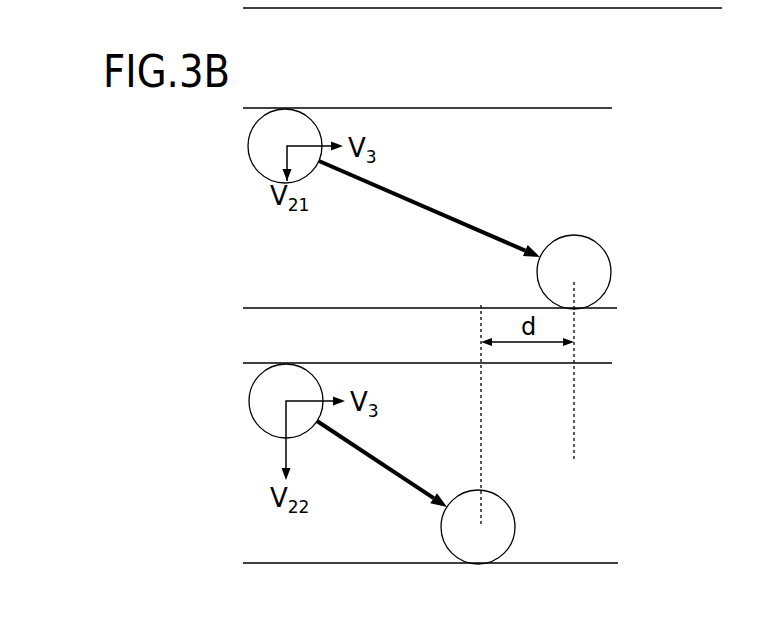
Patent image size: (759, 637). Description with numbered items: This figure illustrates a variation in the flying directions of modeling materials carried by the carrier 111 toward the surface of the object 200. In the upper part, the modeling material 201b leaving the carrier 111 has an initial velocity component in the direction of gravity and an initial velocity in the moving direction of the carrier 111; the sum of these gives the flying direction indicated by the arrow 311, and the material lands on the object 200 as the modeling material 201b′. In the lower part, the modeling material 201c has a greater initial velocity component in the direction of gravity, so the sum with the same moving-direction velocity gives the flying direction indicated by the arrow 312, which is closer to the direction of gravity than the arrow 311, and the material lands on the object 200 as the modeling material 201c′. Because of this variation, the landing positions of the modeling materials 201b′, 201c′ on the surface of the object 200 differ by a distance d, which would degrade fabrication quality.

The carrier 111 is at (608, 108).
The object 200 is at (713, 0).
The modeling material 201b is at (268, 182).
The modeling material 201b′ is at (677, 209).
The modeling material 201c is at (272, 437).
The modeling material 201c′ is at (580, 464).
The arrow 311 is at (420, 203).
The arrow 312 is at (384, 462).